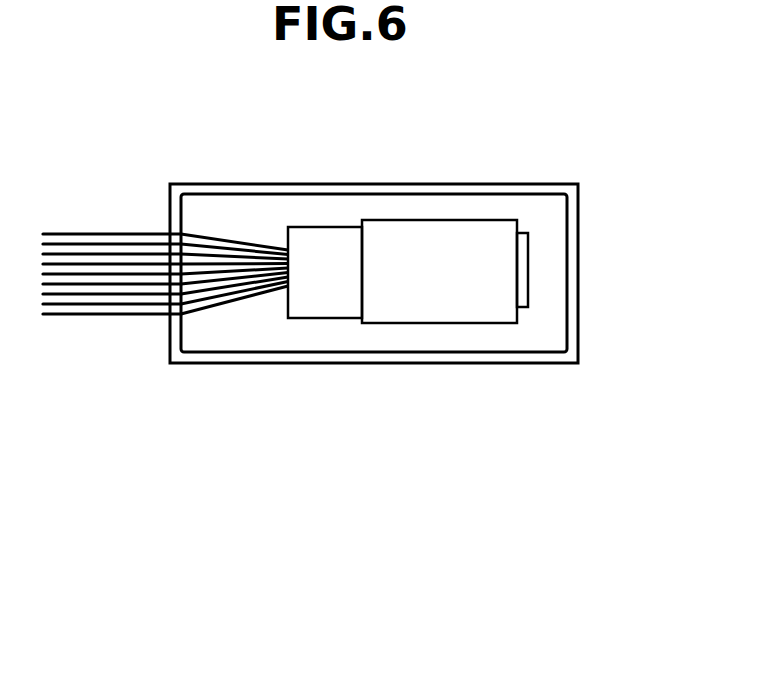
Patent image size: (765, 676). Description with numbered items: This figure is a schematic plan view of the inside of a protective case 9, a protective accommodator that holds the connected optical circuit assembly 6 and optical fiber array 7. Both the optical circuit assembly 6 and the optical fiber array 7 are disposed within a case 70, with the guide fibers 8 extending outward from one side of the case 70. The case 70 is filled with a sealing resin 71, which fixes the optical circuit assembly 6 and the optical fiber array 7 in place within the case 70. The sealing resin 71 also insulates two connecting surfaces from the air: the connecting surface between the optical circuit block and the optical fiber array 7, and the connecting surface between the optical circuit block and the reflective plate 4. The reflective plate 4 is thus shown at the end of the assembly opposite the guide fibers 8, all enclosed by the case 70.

The protective case 9 is at (237, 184).
The case 70 is at (412, 183).
The guide fibers 8 is at (108, 316).
The optical fiber array 7 is at (315, 318).
The optical circuit assembly 6 is at (418, 323).
The reflective plate 4 is at (529, 233).
The sealing resin 71 is at (533, 320).